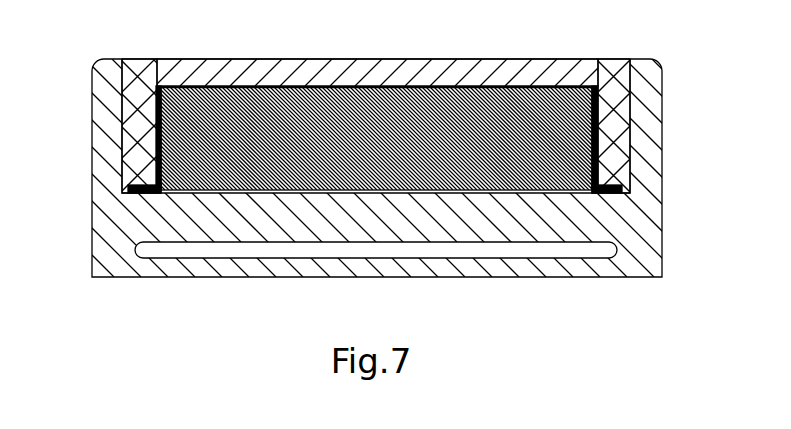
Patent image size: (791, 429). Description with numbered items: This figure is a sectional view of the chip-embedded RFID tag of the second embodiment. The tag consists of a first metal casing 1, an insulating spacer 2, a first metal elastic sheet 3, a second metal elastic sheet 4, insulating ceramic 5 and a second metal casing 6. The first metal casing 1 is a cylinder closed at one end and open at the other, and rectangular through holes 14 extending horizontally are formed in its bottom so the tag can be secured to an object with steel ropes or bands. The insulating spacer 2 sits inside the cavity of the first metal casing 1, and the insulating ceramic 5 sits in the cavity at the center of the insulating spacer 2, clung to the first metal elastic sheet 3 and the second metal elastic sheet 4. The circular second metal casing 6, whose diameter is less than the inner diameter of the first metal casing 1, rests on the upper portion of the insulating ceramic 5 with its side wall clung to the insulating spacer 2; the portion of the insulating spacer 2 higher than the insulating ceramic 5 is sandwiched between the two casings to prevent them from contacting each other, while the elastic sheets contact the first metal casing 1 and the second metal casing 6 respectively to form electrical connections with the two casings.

The first metal casing 1 is at (642, 260).
The insulating spacer 2 is at (127, 58).
The first metal elastic sheet 3 is at (603, 140).
The second metal elastic sheet 4 is at (157, 158).
The insulating ceramic 5 is at (263, 92).
The second metal casing 6 is at (457, 68).
The rectangular through holes 14 is at (420, 253).